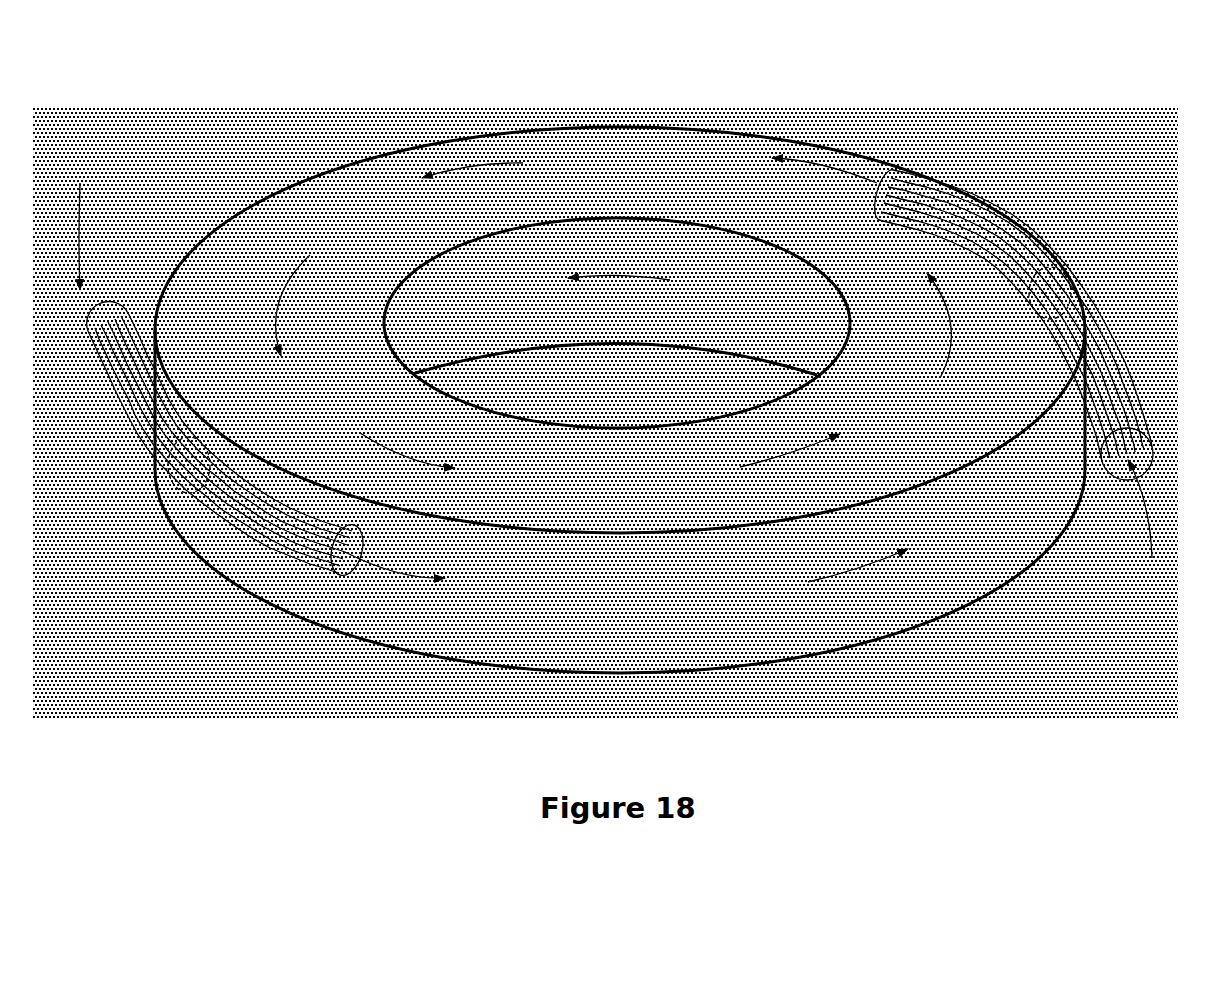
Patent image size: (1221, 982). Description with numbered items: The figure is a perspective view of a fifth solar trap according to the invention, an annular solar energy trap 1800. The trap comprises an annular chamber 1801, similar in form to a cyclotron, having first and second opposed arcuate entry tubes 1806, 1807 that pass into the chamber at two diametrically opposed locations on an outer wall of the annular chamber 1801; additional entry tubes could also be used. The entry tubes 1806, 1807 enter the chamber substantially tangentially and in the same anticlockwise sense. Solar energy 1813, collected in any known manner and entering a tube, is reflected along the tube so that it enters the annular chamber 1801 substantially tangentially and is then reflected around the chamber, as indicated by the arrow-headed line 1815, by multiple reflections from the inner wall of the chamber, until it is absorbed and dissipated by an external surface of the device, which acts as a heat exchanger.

The annular solar energy trap 1800 is at (1030, 114).
The annular chamber 1801 is at (263, 202).
The first arcuate entry tube 1806 is at (138, 440).
The second arcuate entry tube 1807 is at (1113, 341).
The solar energy 1813 is at (82, 238).
The arrow-headed line 1815 is at (495, 170).